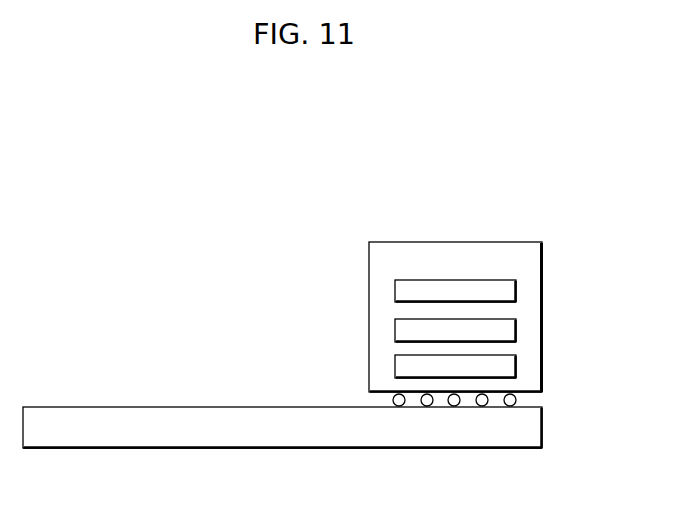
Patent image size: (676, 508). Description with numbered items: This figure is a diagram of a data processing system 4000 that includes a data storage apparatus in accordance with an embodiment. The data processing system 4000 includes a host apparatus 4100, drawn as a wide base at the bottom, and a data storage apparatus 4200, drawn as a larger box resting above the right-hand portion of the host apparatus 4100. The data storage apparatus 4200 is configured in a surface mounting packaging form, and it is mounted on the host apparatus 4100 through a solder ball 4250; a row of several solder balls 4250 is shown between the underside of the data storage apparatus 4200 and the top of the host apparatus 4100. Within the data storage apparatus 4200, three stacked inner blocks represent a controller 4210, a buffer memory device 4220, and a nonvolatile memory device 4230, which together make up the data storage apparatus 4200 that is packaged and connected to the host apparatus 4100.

The data processing system 4000 is at (73, 213).
The host apparatus 4100 is at (282, 427).
The data storage apparatus 4200 is at (455, 317).
The controller 4210 is at (455, 291).
The buffer memory device 4220 is at (455, 330).
The nonvolatile memory device 4230 is at (455, 366).
The solder ball 4250 is at (525, 400).